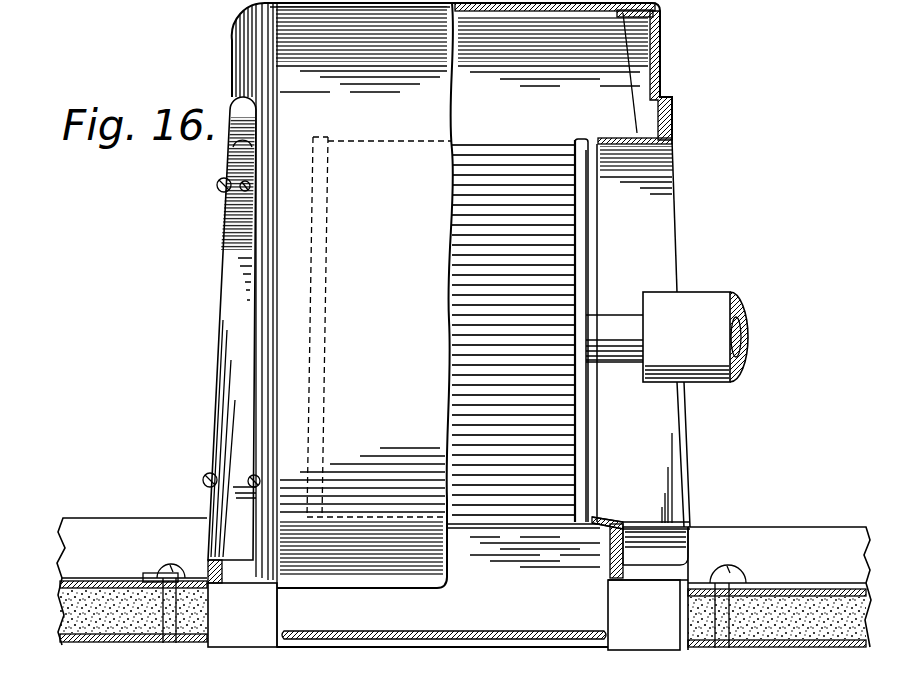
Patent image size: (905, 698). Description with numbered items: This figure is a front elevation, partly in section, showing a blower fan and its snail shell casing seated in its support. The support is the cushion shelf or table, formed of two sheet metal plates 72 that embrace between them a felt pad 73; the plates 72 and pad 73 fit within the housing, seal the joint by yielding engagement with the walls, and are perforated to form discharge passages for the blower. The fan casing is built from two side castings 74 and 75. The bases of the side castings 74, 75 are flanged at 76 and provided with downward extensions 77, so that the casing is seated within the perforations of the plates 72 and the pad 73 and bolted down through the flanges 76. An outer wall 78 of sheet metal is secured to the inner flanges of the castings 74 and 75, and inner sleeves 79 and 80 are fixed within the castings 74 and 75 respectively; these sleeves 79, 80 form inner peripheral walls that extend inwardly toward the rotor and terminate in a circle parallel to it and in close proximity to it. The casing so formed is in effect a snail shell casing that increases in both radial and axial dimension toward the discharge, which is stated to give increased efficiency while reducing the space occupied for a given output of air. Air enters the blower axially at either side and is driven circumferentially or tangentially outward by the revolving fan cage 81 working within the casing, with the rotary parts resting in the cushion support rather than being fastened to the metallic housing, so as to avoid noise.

The sheet metal plates 72 is at (58, 583).
The felt pad 73 is at (83, 612).
The side casting 74 is at (663, 90).
The side casting 75 is at (252, 25).
The flange 76 is at (152, 577).
The downward extension 77 is at (250, 627).
The outer wall 78 is at (545, 8).
The inner sleeve 79 is at (640, 230).
The inner sleeve 80 is at (242, 117).
The revolving fan cage 81 is at (580, 297).